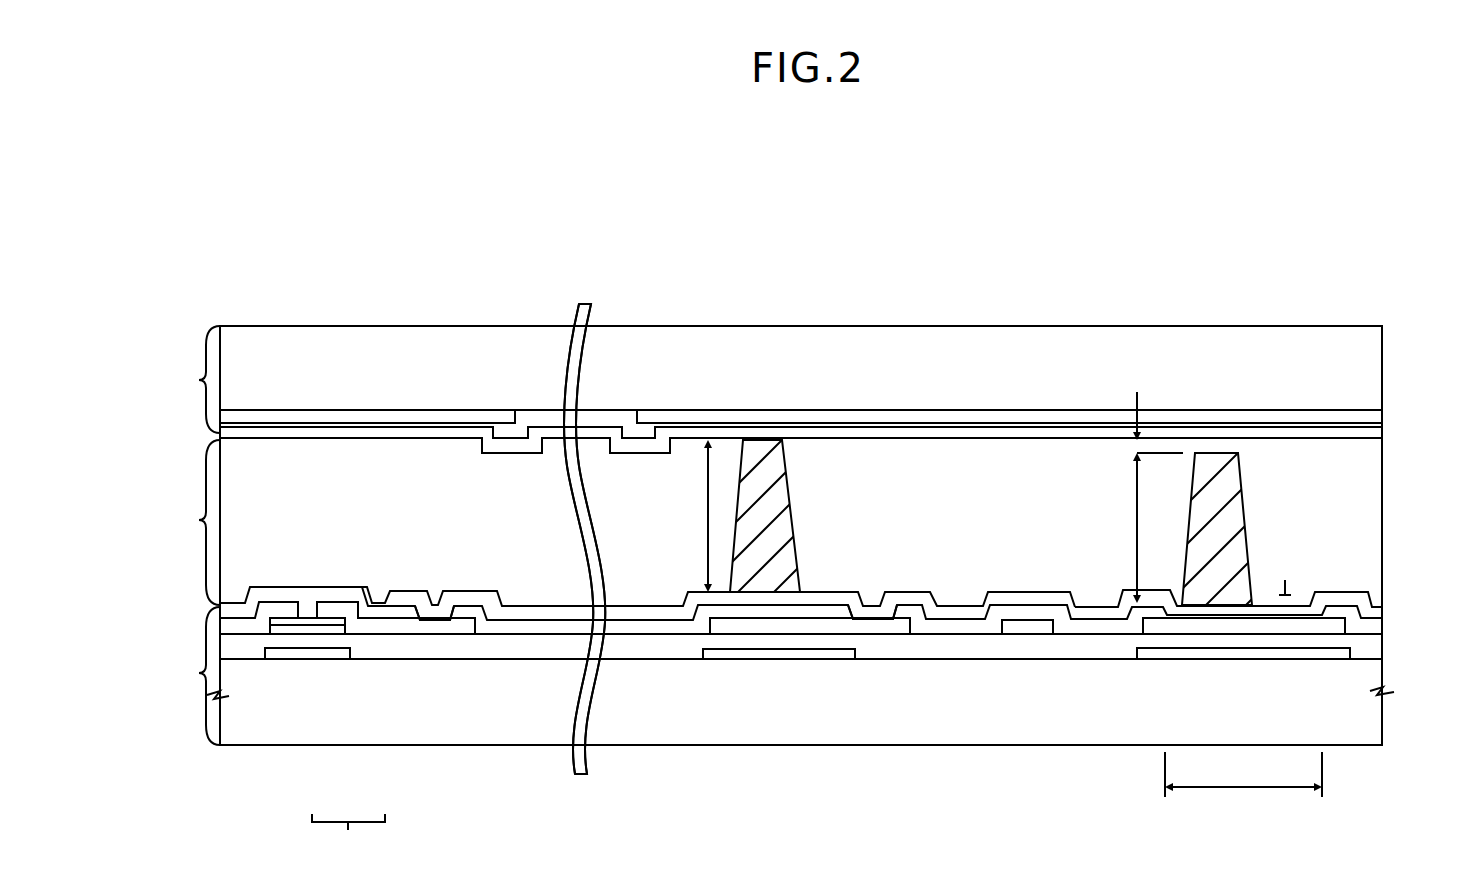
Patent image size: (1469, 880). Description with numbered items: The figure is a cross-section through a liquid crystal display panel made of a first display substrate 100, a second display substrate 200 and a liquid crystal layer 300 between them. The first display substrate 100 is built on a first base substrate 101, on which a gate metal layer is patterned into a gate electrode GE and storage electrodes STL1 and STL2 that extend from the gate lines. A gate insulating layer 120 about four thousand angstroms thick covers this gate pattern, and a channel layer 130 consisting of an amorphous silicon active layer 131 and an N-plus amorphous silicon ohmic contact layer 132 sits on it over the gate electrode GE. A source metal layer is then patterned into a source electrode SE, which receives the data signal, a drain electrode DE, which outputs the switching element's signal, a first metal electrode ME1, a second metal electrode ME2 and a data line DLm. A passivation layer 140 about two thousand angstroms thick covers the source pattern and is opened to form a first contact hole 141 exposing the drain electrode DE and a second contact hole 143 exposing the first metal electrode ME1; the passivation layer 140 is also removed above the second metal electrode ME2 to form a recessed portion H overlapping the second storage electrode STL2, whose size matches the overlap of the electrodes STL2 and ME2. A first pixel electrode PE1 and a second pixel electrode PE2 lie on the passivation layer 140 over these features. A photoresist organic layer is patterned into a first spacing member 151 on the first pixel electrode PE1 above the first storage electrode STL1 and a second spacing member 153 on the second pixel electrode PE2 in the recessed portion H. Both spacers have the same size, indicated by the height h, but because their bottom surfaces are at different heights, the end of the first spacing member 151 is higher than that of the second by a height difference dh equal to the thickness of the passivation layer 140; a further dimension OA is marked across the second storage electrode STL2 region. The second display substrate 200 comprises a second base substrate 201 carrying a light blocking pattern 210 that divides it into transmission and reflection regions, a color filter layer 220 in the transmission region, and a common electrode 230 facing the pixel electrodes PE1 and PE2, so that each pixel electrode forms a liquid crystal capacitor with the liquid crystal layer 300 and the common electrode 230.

The second base substrate 201 is at (1374, 368).
The light blocking pattern 210 is at (1374, 418).
The color filter layer 220 is at (606, 420).
The common electrode 230 is at (1374, 446).
The second display substrate 200 is at (185, 379).
The liquid crystal layer 300 is at (184, 522).
The first display substrate 100 is at (184, 676).
The first base substrate 101 is at (1374, 684).
The gate insulating layer 120 is at (1374, 648).
The passivation layer 140 is at (1374, 626).
The first contact hole 141 is at (432, 590).
The second contact hole 143 is at (870, 596).
The first spacing member 151 is at (783, 483).
The second spacing member 153 is at (1227, 483).
The first pixel electrode PE1 is at (632, 612).
The second pixel electrode PE2 is at (1330, 592).
The source electrode SE is at (243, 628).
The gate electrode GE is at (287, 655).
The active layer 131 is at (323, 630).
The ohmic contact layer 132 is at (335, 622).
The channel layer 130 is at (348, 834).
The drain electrode DE is at (428, 628).
The first storage electrode STL1 is at (758, 655).
The first metal electrode ME1 is at (848, 627).
The data line DLm is at (1028, 628).
The second storage electrode STL2 is at (1304, 655).
The second metal electrode ME2 is at (1323, 627).
The spacer height h is at (935, 521).
The height difference Δh dh is at (1124, 413).
The recessed portion H is at (1285, 560).
The opening area OA is at (1243, 774).